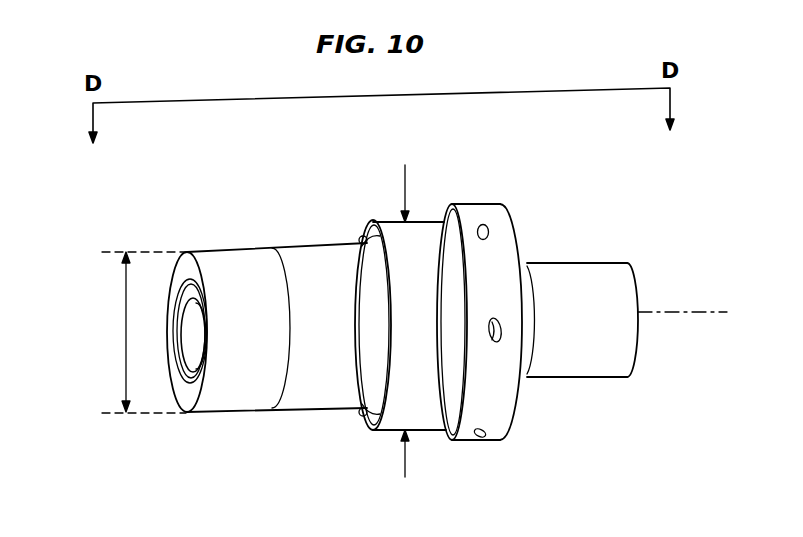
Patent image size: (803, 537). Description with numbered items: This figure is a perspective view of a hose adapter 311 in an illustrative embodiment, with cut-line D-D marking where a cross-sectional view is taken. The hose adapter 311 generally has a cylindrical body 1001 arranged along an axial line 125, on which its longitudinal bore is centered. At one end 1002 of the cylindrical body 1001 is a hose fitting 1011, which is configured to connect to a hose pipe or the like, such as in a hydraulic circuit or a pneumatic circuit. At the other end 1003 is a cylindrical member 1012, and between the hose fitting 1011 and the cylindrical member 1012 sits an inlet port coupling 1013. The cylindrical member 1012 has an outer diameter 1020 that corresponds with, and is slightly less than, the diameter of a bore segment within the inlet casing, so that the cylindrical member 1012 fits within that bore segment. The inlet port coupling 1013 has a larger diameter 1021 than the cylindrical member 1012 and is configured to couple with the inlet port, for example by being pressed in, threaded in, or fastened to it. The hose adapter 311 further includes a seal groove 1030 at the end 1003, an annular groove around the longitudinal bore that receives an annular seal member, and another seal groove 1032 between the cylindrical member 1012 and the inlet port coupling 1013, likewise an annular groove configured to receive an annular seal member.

The hose adapter 311 is at (80, 216).
The cylindrical body 1001 is at (358, 162).
The end 1002 is at (690, 385).
The end 1003 is at (147, 434).
The hose fitting 1011 is at (595, 273).
The cylindrical member 1012 is at (235, 395).
The inlet port coupling 1013 is at (432, 417).
The outer diameter 1020 is at (124, 318).
The diameter 1021 is at (404, 455).
The seal groove 1030 is at (186, 282).
The seal groove 1032 is at (357, 238).
The axial line 125 is at (688, 312).